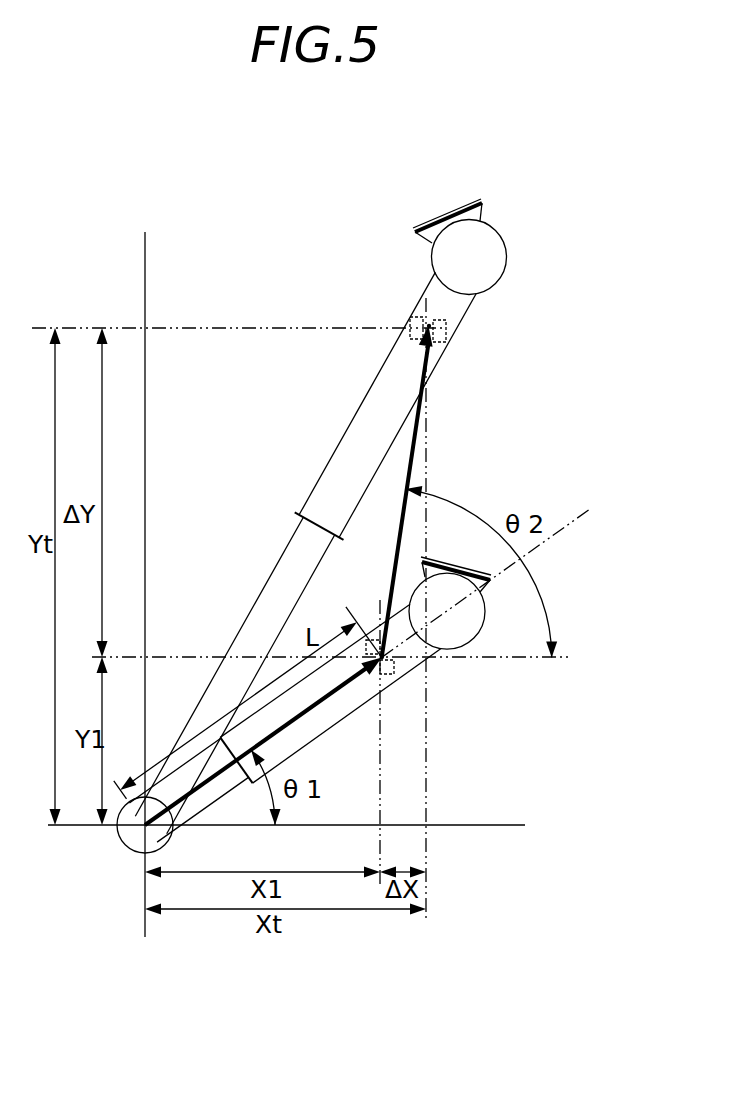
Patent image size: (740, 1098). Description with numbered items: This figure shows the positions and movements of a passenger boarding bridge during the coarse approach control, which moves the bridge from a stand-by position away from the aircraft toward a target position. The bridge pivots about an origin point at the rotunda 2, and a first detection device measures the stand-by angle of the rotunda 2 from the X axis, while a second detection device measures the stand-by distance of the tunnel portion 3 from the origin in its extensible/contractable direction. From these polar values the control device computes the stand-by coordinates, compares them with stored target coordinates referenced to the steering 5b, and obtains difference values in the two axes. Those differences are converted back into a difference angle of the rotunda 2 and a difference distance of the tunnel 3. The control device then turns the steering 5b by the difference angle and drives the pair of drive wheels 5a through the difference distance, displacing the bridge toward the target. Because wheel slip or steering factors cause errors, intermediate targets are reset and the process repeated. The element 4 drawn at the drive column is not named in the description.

The rotunda 2 is at (130, 832).
The tunnel portion 3 is at (331, 713).
The sheave 4 is at (487, 262).
The drive wheel 5a is at (388, 665).
The steering 5b is at (388, 660).